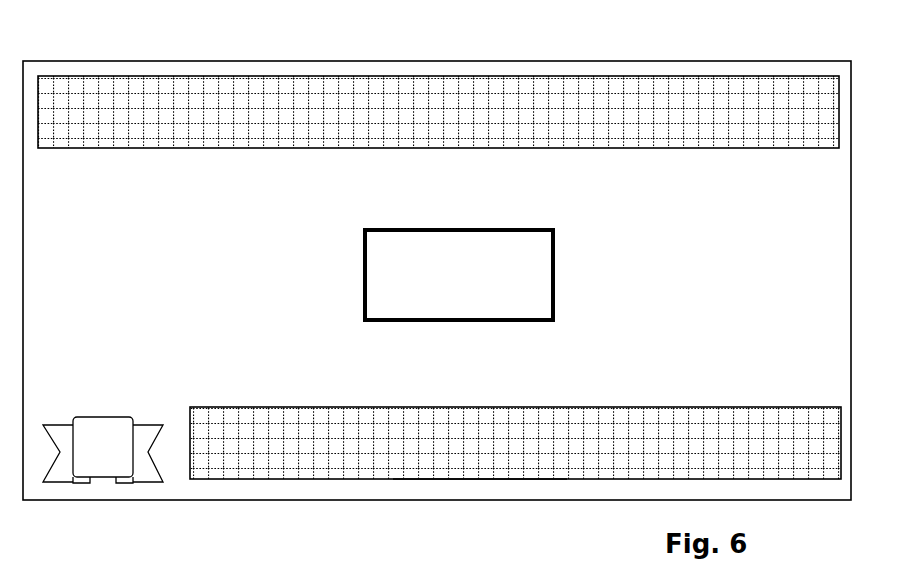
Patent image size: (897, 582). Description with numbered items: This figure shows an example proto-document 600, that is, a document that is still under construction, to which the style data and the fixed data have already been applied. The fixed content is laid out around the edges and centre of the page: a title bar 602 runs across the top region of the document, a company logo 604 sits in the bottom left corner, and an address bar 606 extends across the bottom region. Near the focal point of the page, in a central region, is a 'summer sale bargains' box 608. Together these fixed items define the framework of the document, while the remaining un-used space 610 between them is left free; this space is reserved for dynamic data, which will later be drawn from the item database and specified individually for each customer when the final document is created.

The proto-document 600 is at (255, 61).
The title bar 602 is at (723, 76).
The company logo 604 is at (78, 483).
The address bar 606 is at (350, 479).
The 'summer sale bargains' box 608 is at (435, 320).
The un-used space 610 is at (226, 240).